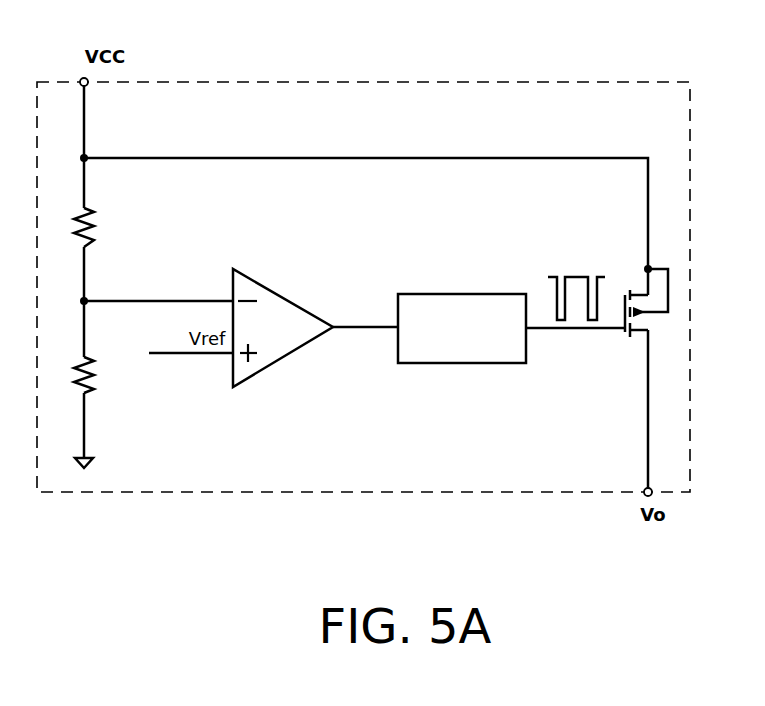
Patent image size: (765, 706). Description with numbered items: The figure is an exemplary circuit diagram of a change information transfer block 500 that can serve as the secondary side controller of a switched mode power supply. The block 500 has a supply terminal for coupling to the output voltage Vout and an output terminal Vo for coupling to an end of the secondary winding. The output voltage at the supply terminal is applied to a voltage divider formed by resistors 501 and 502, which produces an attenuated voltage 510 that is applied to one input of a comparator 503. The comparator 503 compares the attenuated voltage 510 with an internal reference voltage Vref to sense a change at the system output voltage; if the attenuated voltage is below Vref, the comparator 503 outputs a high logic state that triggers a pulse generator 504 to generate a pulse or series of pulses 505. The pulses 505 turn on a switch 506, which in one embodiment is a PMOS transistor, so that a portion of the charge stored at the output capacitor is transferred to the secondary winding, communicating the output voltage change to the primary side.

The change information transfer block 500 is at (341, 44).
The resistor 501 is at (106, 203).
The resistor 502 is at (100, 353).
The comparator 503 is at (282, 290).
The pulse generator 504 is at (447, 287).
The pulses 505 is at (580, 269).
The switch 506 is at (619, 358).
The attenuated voltage 510 is at (158, 289).